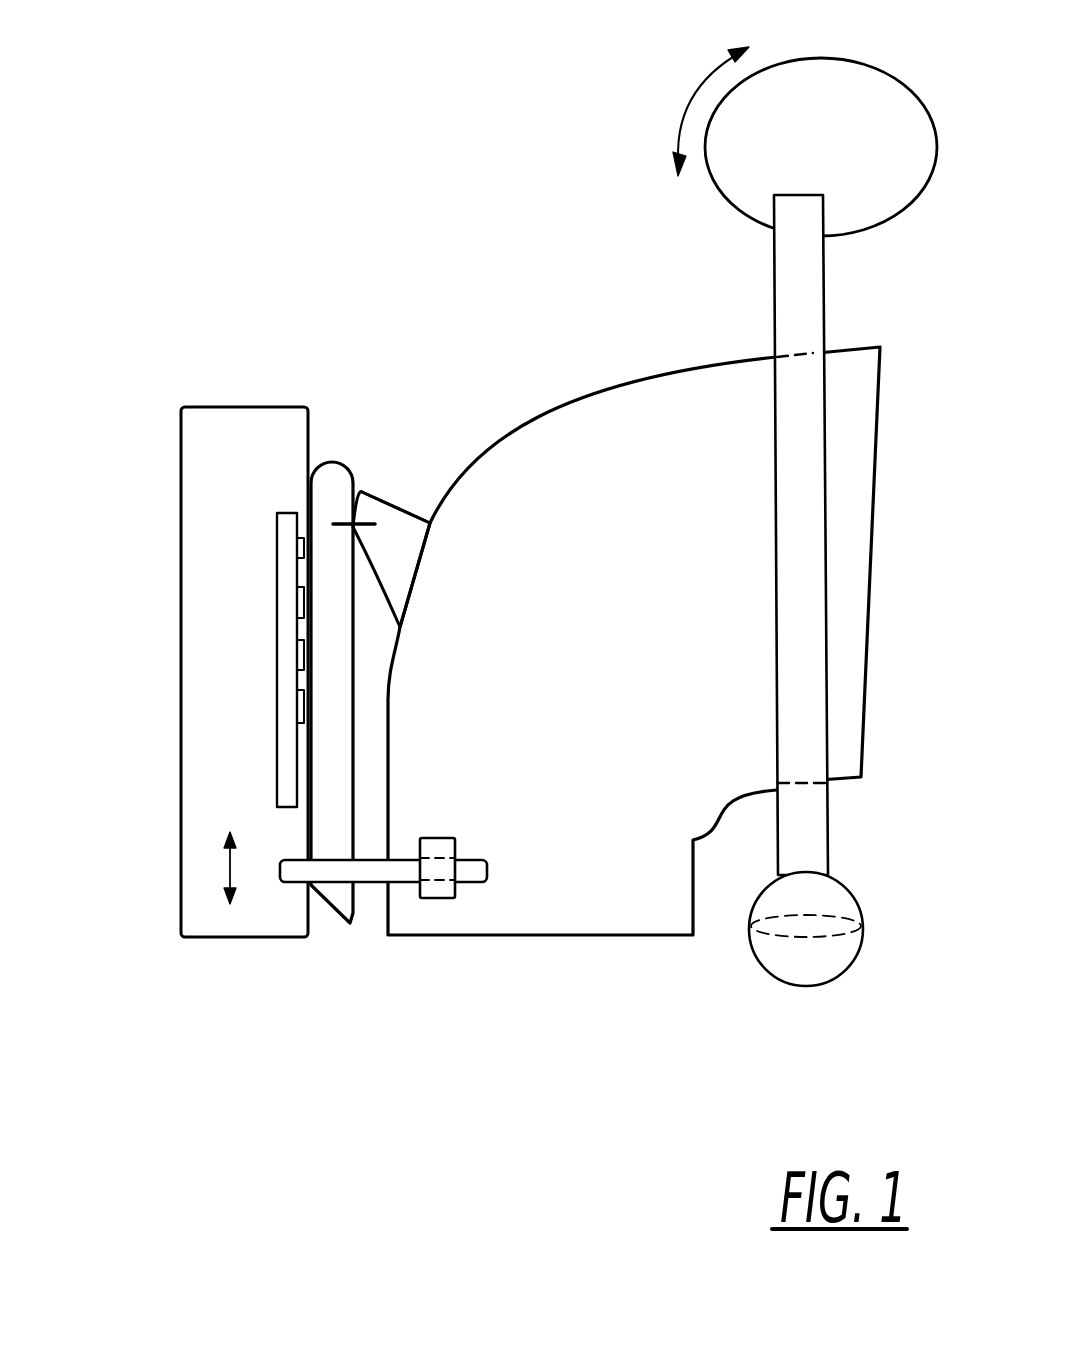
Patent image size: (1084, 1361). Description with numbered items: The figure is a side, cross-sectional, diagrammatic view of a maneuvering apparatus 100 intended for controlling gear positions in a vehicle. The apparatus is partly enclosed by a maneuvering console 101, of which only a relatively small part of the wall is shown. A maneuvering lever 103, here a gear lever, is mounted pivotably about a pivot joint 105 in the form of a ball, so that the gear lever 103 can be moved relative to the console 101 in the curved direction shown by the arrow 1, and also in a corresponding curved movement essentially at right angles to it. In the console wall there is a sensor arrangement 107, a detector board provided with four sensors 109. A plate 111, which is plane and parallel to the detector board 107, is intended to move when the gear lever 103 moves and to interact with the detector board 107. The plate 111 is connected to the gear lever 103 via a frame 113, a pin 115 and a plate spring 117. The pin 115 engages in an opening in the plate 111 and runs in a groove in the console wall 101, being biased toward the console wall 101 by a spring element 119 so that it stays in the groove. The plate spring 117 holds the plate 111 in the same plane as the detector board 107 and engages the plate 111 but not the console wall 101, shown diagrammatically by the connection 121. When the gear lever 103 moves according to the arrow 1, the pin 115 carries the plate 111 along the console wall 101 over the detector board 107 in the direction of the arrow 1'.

The maneuvering apparatus 100 is at (252, 127).
The arrow 1 is at (779, 141).
The arrow 1' is at (167, 866).
The maneuvering console 101 is at (236, 407).
The maneuvering lever 103 is at (810, 300).
The pivot joint 105 is at (813, 988).
The sensor arrangement 107 is at (273, 582).
The sensors 109 is at (293, 703).
The plate 111 is at (332, 477).
The frame 113 is at (583, 937).
The pin 115 is at (373, 875).
The plate spring 117 is at (403, 520).
The spring element 119 is at (440, 898).
The connection 121 is at (377, 497).